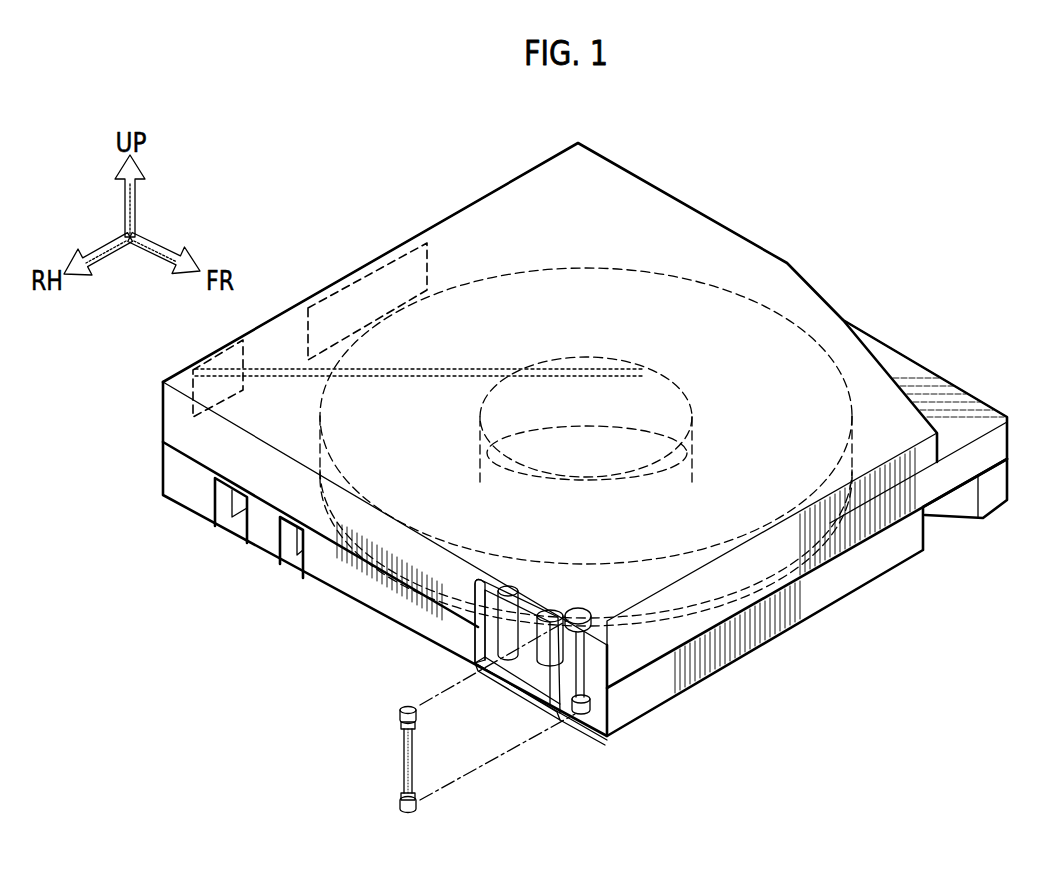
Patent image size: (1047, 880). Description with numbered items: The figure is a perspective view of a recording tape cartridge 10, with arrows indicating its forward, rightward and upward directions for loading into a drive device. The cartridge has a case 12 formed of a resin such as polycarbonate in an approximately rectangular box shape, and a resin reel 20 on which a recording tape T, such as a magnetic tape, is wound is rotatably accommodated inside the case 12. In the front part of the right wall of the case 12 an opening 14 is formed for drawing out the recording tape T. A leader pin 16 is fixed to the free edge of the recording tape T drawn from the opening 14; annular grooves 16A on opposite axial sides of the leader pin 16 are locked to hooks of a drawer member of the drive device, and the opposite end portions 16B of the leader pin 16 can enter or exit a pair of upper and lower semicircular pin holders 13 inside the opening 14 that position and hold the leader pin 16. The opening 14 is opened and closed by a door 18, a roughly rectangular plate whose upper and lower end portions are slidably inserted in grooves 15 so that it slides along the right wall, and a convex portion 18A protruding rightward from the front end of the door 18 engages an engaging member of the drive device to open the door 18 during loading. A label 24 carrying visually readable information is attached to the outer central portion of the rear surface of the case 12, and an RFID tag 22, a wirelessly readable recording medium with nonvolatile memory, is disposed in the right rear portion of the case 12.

The recording tape cartridge 10 is at (735, 206).
The case 12 is at (458, 238).
The pin holder 13 is at (577, 612).
The opening 14 is at (549, 688).
The groove 15 is at (552, 683).
The leader pin 16 is at (372, 752).
The annular groove 16A is at (400, 722).
The end portion 16B is at (400, 706).
The door 18 is at (468, 641).
The convex portion 18A is at (478, 597).
The reel 20 is at (597, 266).
The RFID tag 22 is at (163, 386).
The label 24 is at (377, 273).
The recording tape T is at (465, 769).